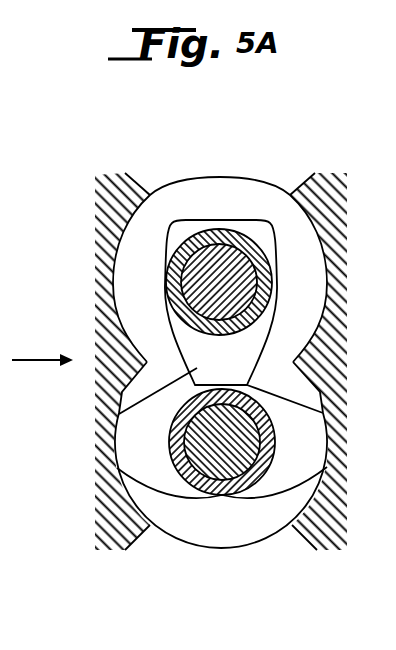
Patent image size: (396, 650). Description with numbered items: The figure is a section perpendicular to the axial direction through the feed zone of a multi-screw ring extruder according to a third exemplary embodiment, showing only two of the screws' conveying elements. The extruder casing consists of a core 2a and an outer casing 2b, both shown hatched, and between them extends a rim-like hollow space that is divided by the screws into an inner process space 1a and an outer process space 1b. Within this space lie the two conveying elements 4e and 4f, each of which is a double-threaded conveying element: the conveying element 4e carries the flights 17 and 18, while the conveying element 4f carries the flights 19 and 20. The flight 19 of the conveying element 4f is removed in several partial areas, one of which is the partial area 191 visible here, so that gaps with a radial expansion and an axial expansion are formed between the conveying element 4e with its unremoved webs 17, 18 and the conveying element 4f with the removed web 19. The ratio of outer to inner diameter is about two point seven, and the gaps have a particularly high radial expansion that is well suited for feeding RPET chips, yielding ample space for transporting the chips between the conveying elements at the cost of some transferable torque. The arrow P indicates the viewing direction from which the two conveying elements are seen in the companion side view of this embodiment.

The inner process space 1a is at (297, 281).
The outer process space 1b is at (133, 251).
The core 2a is at (322, 363).
The outer casing 2b is at (113, 523).
The conveying element 4e is at (222, 504).
The conveying element 4f is at (150, 279).
The flight 17 is at (123, 445).
The flight 18 is at (318, 447).
The flight 19 is at (178, 226).
The partial area 191 is at (219, 212).
The flight 20 is at (178, 350).
The arrow P is at (42, 349).